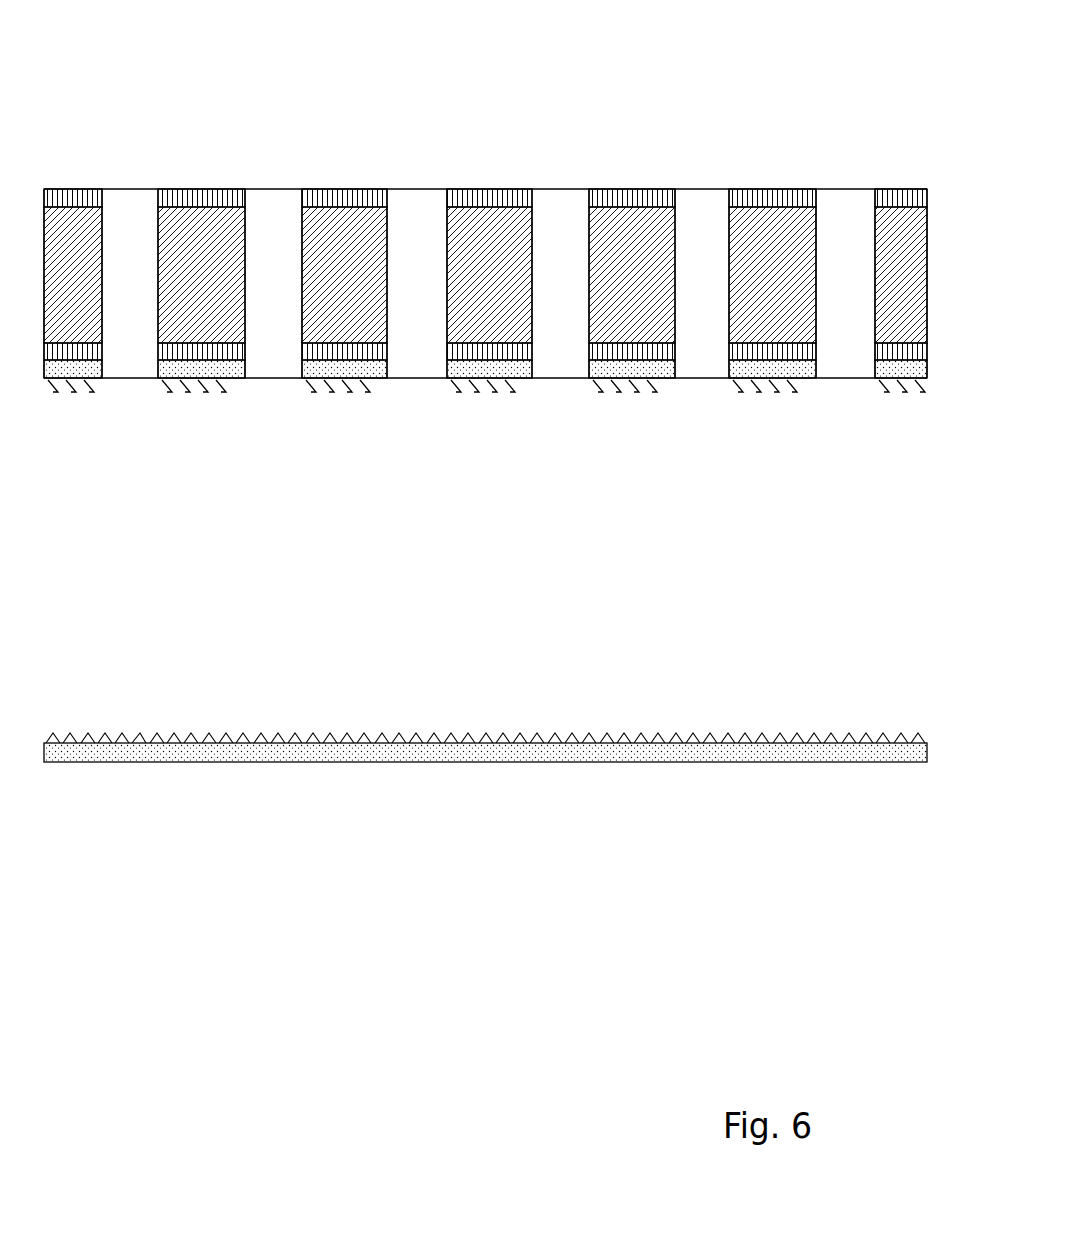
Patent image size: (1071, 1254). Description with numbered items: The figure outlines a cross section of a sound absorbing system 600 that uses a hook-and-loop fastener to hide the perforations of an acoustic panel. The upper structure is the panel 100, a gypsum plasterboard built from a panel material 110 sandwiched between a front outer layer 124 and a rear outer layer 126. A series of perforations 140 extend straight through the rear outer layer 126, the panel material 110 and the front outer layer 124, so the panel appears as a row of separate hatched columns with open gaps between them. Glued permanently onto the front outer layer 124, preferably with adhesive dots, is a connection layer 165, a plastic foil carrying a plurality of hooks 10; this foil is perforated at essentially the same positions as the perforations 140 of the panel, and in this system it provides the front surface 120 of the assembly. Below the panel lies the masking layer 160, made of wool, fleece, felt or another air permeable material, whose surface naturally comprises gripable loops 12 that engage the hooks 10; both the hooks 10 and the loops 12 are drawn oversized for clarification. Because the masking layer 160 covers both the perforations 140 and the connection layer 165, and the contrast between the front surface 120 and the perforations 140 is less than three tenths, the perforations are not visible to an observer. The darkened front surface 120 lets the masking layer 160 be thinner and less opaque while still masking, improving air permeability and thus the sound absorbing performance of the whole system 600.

The hooks 10 is at (72, 397).
The loops 12 is at (121, 740).
The panel 100 is at (485, 283).
The panel material 110 is at (490, 265).
The front surface 120 is at (485, 381).
The front outer layer 124 is at (193, 357).
The rear outer layer 126 is at (196, 189).
The perforations 140 is at (712, 290).
The masking layer 160 is at (365, 764).
The connection layer 165 is at (333, 379).
The sound absorbing system 600 is at (501, 784).